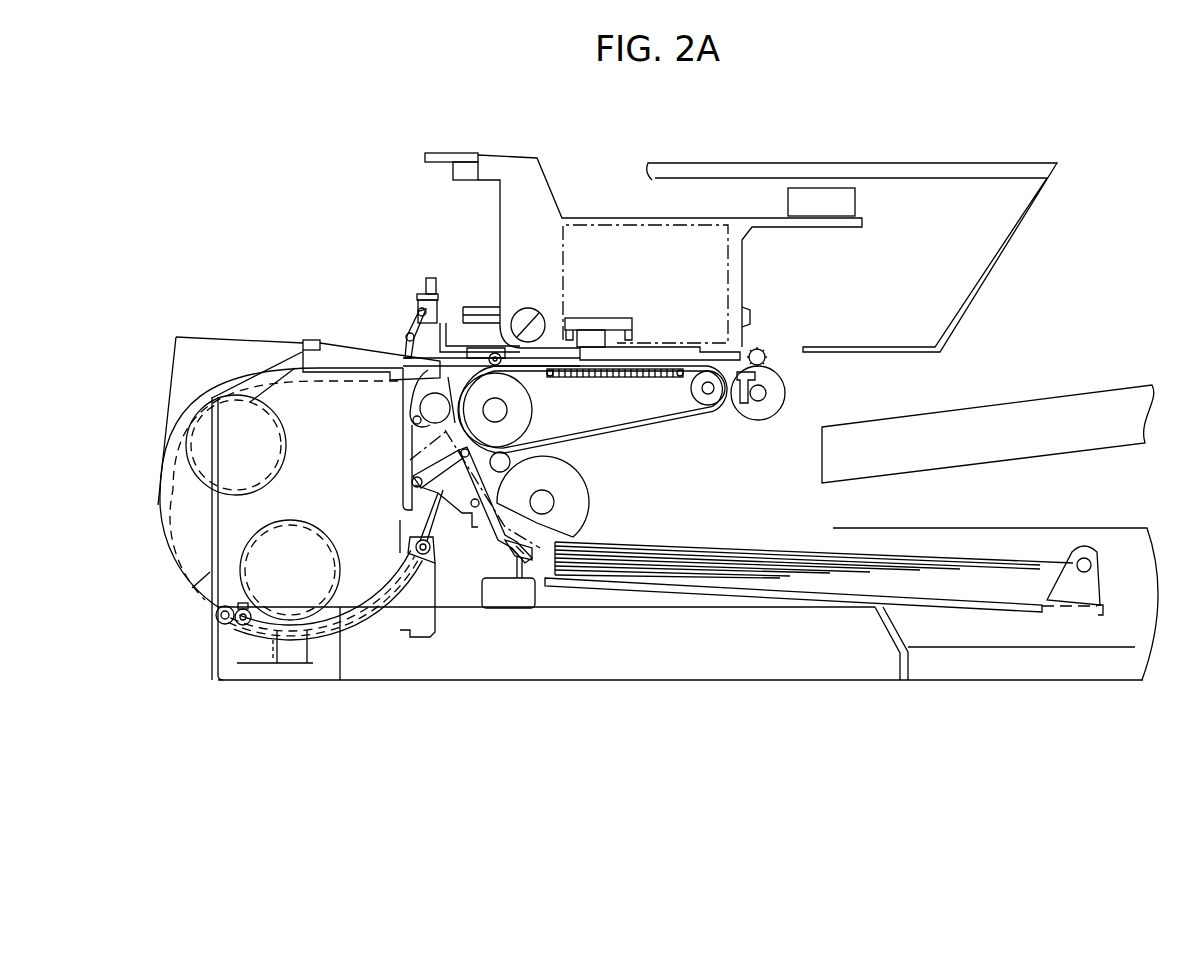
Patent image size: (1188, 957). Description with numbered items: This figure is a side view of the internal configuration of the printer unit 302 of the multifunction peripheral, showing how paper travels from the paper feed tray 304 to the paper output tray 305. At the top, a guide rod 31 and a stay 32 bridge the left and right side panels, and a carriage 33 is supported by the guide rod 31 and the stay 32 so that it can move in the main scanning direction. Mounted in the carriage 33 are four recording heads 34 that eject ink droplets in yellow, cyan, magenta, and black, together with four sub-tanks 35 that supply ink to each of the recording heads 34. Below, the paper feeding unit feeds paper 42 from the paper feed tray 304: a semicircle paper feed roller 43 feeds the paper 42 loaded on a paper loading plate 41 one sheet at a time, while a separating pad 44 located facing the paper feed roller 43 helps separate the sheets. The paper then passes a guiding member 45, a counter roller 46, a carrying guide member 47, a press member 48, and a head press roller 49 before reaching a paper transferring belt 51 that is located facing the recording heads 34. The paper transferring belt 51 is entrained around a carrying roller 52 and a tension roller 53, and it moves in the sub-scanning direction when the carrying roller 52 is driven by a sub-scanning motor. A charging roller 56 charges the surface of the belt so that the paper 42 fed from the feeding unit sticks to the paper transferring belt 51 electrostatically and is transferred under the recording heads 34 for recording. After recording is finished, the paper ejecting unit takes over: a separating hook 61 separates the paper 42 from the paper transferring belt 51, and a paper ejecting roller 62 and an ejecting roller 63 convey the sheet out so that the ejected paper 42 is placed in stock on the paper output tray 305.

The printer unit 302 is at (262, 182).
The paper feed tray 304 is at (882, 672).
The paper output tray 305 is at (1106, 398).
The guide rod 31 is at (529, 311).
The stay 32 is at (462, 163).
The carriage 33 is at (546, 190).
The recording heads 34 is at (664, 347).
The sub-tanks 35 is at (618, 240).
The paper loading plate 41 is at (630, 590).
The paper 42 is at (703, 575).
The paper feed roller 43 is at (582, 500).
The separating pad 44 is at (513, 552).
The guiding member 45 is at (470, 505).
The counter roller 46 is at (417, 412).
The carrying guide member 47 is at (438, 376).
The press member 48 is at (420, 319).
The head press roller 49 is at (490, 352).
The paper transferring belt 51 is at (633, 425).
The carrying roller 52 is at (530, 408).
The tension roller 53 is at (710, 408).
The charging roller 56 is at (512, 463).
The separating hook 61 is at (753, 410).
The paper ejecting roller 62 is at (787, 392).
The ejecting roller 63 is at (763, 350).